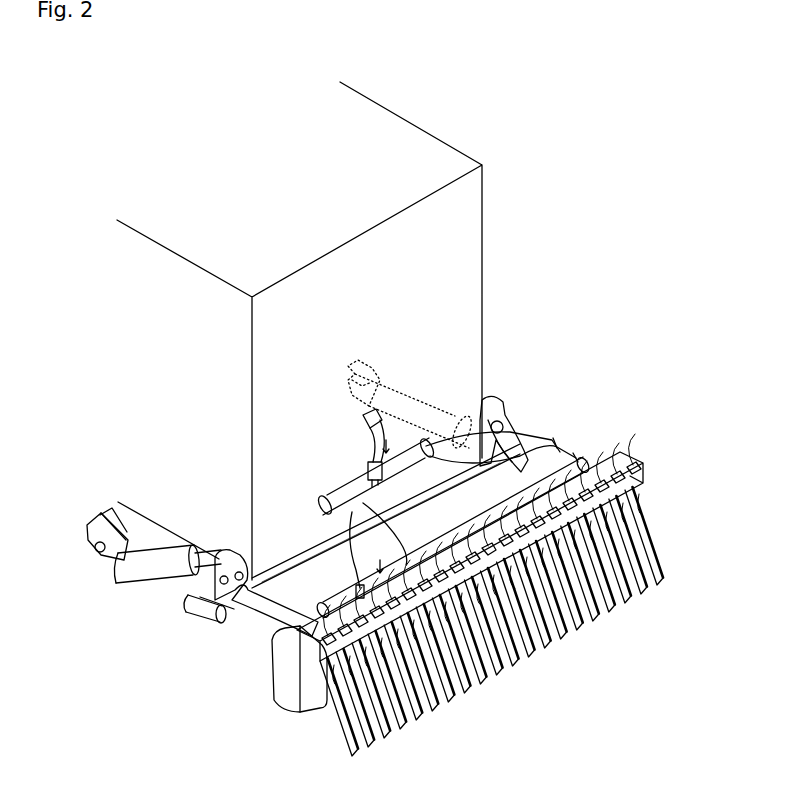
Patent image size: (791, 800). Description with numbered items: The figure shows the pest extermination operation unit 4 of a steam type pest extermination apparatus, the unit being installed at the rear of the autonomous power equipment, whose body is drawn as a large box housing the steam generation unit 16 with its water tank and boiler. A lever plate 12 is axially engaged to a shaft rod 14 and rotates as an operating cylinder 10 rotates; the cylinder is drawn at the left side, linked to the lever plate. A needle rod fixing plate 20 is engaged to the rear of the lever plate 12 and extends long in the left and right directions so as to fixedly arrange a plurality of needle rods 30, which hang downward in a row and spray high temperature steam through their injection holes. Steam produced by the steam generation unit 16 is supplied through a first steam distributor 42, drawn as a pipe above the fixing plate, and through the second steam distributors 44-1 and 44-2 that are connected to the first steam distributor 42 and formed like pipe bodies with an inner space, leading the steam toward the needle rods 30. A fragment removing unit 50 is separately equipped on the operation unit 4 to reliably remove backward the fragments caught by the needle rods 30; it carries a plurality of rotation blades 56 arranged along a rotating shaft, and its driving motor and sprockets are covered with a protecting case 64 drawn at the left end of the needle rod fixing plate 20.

The pest extermination operation unit 4 is at (598, 353).
The operating cylinder 10 is at (152, 563).
The lever plate 12 is at (256, 626).
The shaft rod 14 is at (294, 571).
The steam generation unit 16 is at (460, 272).
The needle rod fixing plate 20 is at (640, 459).
The needle rods 30 is at (418, 707).
The first steam distributor 42 is at (362, 487).
The second steam distributor 44-1 is at (363, 587).
The second steam distributor 44-2 is at (490, 513).
The fragment removing unit 50 is at (292, 712).
The rotation blades 56 is at (595, 540).
The protecting case 64 is at (281, 672).